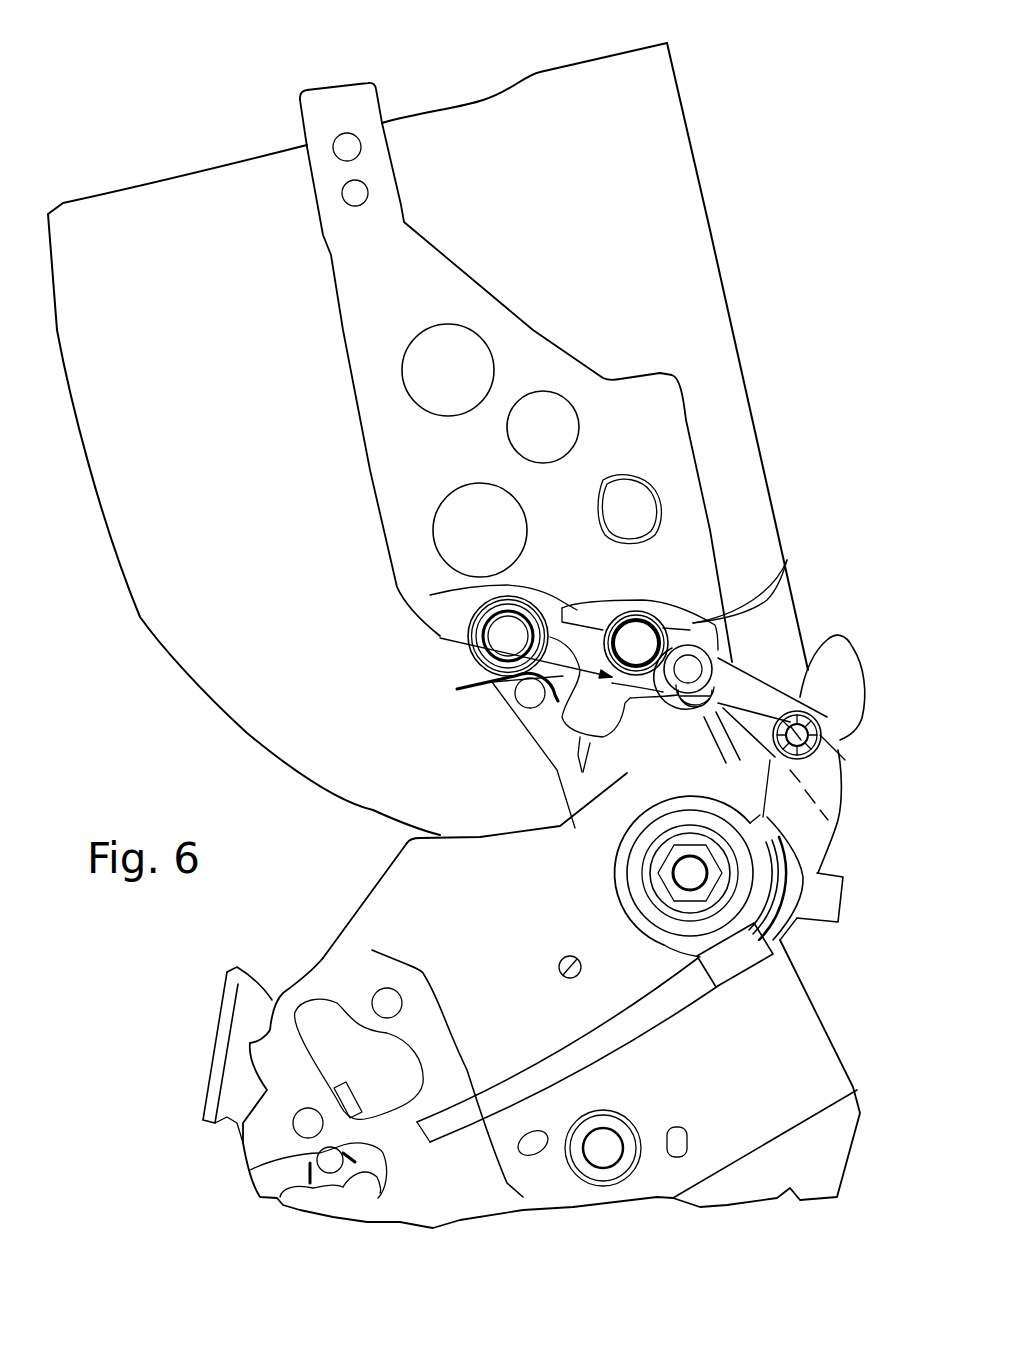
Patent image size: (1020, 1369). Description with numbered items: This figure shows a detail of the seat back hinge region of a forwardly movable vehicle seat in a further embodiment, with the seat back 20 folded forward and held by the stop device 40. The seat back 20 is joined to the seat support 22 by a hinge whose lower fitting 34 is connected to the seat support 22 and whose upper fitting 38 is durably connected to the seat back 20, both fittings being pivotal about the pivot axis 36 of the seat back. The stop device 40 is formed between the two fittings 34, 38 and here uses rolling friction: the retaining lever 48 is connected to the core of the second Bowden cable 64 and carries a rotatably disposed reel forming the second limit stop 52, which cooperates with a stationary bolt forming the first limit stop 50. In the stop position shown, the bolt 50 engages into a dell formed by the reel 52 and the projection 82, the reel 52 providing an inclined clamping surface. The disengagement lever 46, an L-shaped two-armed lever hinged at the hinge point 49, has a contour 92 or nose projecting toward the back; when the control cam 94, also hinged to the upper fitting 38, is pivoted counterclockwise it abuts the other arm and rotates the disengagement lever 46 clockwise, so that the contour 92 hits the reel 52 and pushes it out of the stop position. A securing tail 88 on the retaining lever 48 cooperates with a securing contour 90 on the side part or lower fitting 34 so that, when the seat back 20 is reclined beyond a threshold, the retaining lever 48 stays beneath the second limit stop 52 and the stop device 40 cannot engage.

The seat back 20 is at (650, 186).
The seat support 22 is at (413, 933).
The lower fitting 34 is at (850, 697).
The pivot axis 36 is at (693, 875).
The upper fitting 38 is at (657, 407).
The stop device 40 is at (748, 553).
The disengagement lever 46 is at (620, 607).
The retaining lever 48 is at (758, 690).
The hinge point 49 is at (842, 748).
The first limit stop 50 is at (440, 598).
The second limit stop 52 is at (808, 670).
The second Bowden cable 64 is at (670, 1012).
The projection 82 is at (440, 638).
The securing tail 88 is at (837, 815).
The securing contour 90 is at (820, 900).
The contour 92 is at (775, 600).
The control cam 94 is at (492, 682).